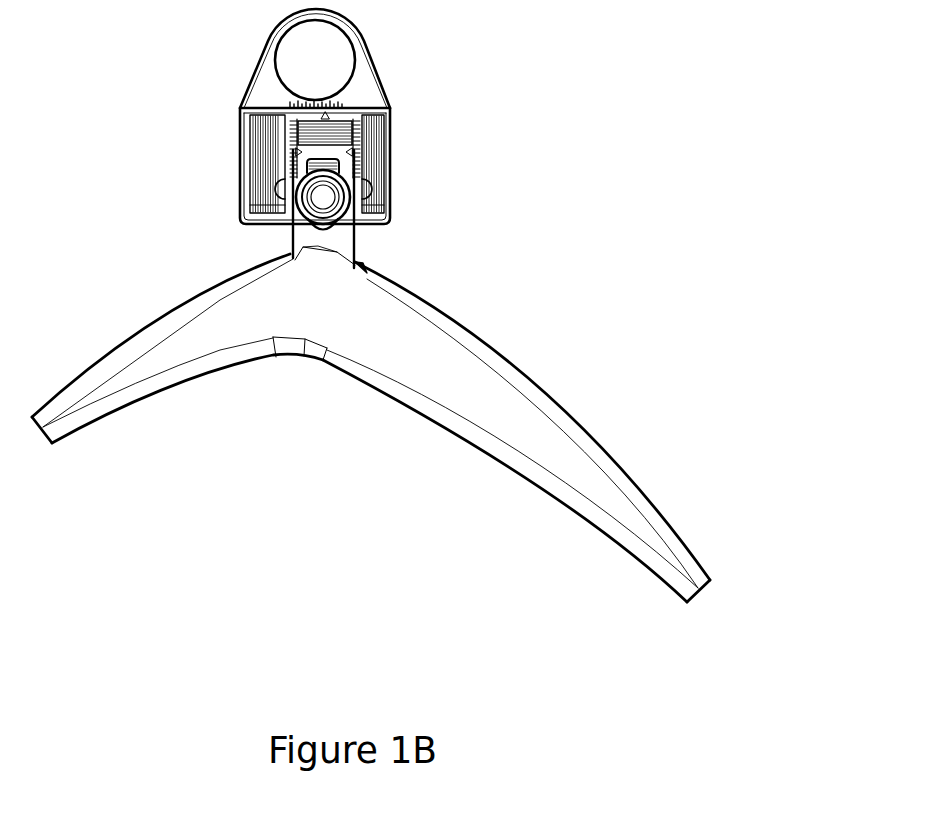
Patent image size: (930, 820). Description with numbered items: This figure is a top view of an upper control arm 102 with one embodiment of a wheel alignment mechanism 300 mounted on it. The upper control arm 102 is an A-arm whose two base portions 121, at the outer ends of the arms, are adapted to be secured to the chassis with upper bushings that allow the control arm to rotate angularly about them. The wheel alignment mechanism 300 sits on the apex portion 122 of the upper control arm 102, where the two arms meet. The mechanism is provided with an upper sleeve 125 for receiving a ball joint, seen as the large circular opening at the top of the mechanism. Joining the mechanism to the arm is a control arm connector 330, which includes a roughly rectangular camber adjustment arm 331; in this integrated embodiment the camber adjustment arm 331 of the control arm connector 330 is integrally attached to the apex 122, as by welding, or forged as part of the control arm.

The upper control arm 102 is at (548, 430).
The base portions 121 is at (83, 415).
The apex portion 122 is at (323, 268).
The upper sleeve 125 is at (363, 63).
The wheel alignment mechanism 300 is at (402, 128).
The control arm connector 330 is at (302, 235).
The camber adjustment arm 331 is at (343, 172).